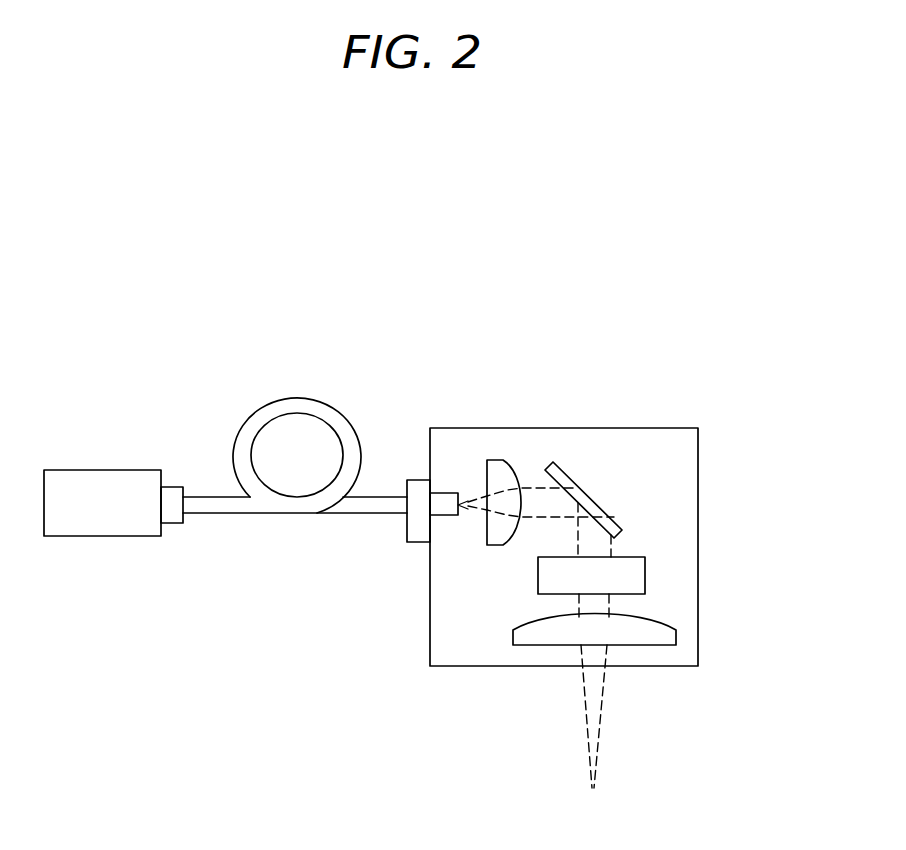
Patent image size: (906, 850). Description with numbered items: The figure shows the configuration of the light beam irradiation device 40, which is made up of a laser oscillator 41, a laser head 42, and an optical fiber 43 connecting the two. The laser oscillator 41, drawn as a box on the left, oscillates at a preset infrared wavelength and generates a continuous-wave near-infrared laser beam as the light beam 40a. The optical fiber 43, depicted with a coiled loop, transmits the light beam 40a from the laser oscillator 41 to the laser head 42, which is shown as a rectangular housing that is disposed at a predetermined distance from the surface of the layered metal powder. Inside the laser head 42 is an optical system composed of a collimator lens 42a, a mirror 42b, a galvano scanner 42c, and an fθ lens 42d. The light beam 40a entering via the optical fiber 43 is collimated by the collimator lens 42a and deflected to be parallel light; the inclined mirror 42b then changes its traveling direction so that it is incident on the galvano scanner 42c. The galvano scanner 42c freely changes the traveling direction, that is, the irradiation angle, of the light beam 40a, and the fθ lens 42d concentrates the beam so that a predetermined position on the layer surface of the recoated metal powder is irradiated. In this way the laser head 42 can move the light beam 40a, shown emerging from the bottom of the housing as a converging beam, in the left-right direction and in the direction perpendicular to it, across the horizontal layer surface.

The light beam irradiation device 40 is at (718, 312).
The light beam 40a is at (597, 725).
The laser oscillator 41 is at (72, 470).
The laser head 42 is at (714, 410).
The collimator lens 42a is at (496, 460).
The mirror 42b is at (573, 478).
The galvano scanner 42c is at (645, 578).
The fθ lens 42d is at (676, 637).
The optical fiber 43 is at (297, 400).